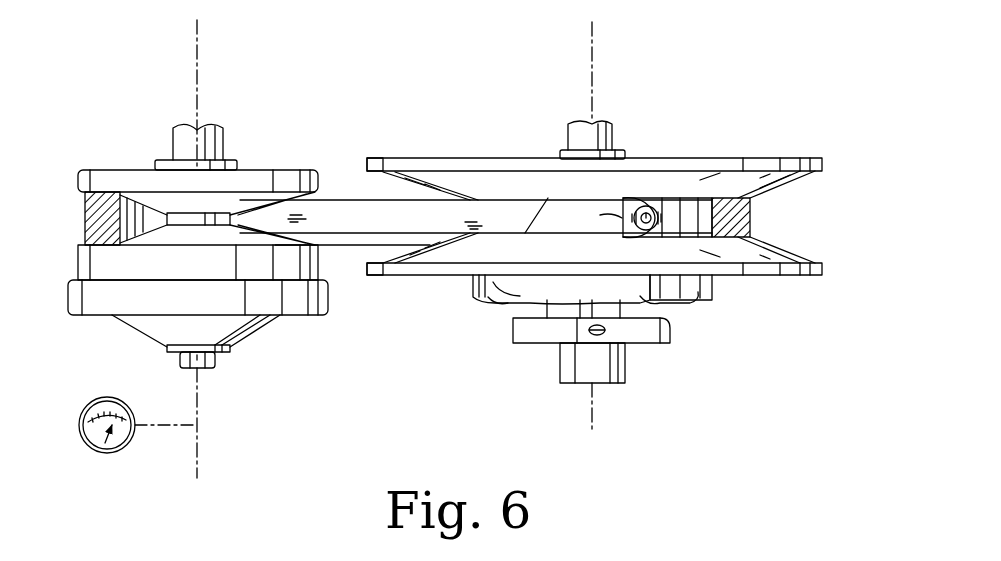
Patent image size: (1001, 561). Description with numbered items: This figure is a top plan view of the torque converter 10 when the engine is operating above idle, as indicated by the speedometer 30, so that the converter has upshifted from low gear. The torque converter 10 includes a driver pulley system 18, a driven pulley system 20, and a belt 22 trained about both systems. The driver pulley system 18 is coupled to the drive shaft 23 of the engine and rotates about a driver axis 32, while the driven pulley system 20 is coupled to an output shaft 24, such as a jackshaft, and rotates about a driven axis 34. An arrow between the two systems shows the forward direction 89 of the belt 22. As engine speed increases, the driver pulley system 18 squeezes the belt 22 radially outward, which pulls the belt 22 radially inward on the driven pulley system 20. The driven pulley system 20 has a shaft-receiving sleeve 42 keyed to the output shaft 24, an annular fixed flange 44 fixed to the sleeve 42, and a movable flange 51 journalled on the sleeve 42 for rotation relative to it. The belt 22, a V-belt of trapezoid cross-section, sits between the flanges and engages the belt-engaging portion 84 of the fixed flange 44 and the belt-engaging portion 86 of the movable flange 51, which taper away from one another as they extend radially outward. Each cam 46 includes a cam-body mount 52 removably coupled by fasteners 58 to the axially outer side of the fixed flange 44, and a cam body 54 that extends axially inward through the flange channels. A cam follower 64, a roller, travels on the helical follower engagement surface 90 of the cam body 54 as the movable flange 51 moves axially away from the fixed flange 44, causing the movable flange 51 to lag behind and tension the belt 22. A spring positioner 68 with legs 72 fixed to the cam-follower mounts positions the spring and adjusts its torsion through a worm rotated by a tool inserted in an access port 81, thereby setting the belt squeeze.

The torque converter 10 is at (692, 88).
The driver pulley system 18 is at (198, 251).
The driven pulley system 20 is at (582, 257).
The belt 22 is at (336, 196).
The drive shaft 23 is at (182, 145).
The output shaft 24 is at (588, 146).
The speedometer 30 is at (112, 452).
The driver axis 32 is at (205, 70).
The driven axis 34 is at (584, 56).
The shaft-receiving sleeve 42 is at (608, 384).
The fixed flange 44 is at (773, 278).
The cam 46 is at (507, 307).
The movable flange 51 is at (737, 150).
The cam-body mount 52 is at (500, 292).
The cam body 54 is at (530, 214).
The fasteners 58 is at (486, 302).
The cam follower 64 is at (646, 205).
The spring positioner 68 is at (538, 346).
The legs 72 is at (583, 303).
The access port 81 is at (596, 336).
The belt-engaging portion 84 is at (795, 262).
The belt-engaging portion 86 is at (760, 190).
The forward direction 89 is at (356, 263).
The follower engagement surface 90 is at (600, 215).